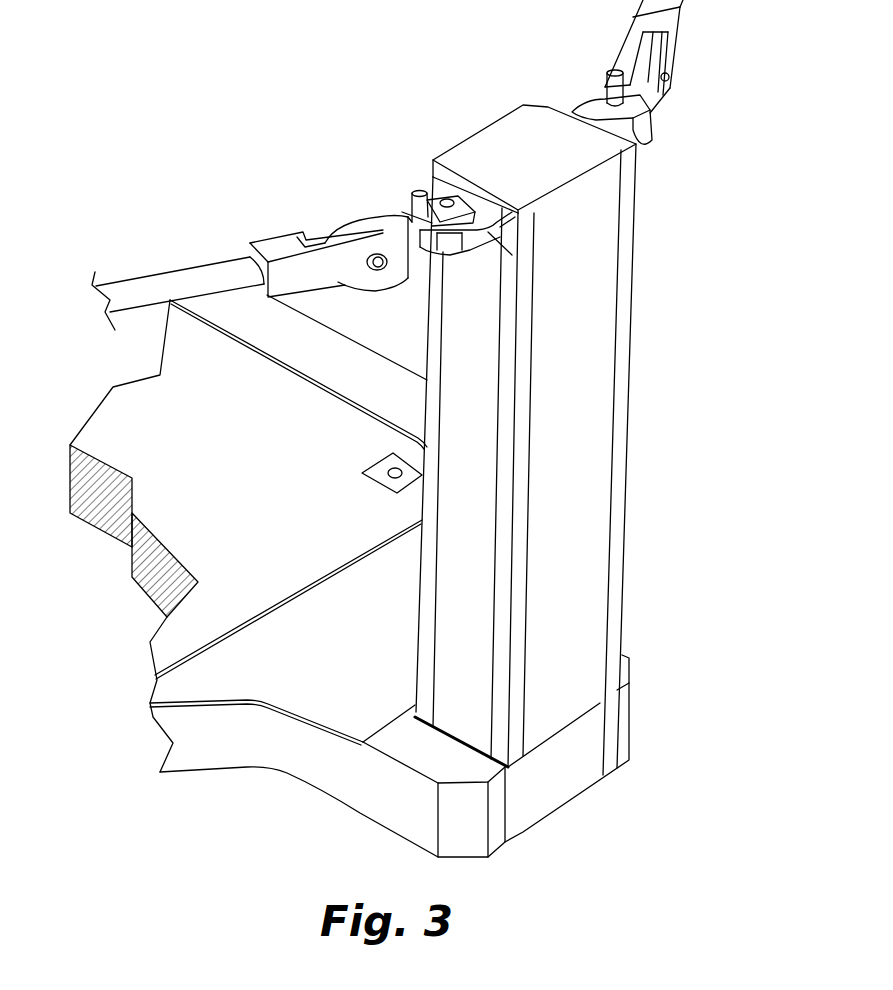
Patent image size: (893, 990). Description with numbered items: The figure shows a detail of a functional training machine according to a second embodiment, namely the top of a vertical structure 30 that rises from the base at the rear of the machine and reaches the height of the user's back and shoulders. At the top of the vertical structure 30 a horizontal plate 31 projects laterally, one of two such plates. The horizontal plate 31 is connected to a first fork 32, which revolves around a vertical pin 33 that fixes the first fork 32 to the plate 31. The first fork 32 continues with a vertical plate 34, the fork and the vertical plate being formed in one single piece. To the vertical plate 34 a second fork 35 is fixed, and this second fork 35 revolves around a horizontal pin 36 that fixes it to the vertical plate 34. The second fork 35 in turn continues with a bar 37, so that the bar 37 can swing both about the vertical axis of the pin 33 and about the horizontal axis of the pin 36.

The vertical structure 30 is at (580, 342).
The horizontal plate 31 is at (643, 120).
The first fork 32 is at (630, 102).
The vertical pin 33 is at (612, 100).
The vertical plate 34 is at (390, 228).
The second fork 35 is at (318, 232).
The horizontal pin 36 is at (380, 267).
The bar 37 is at (278, 248).